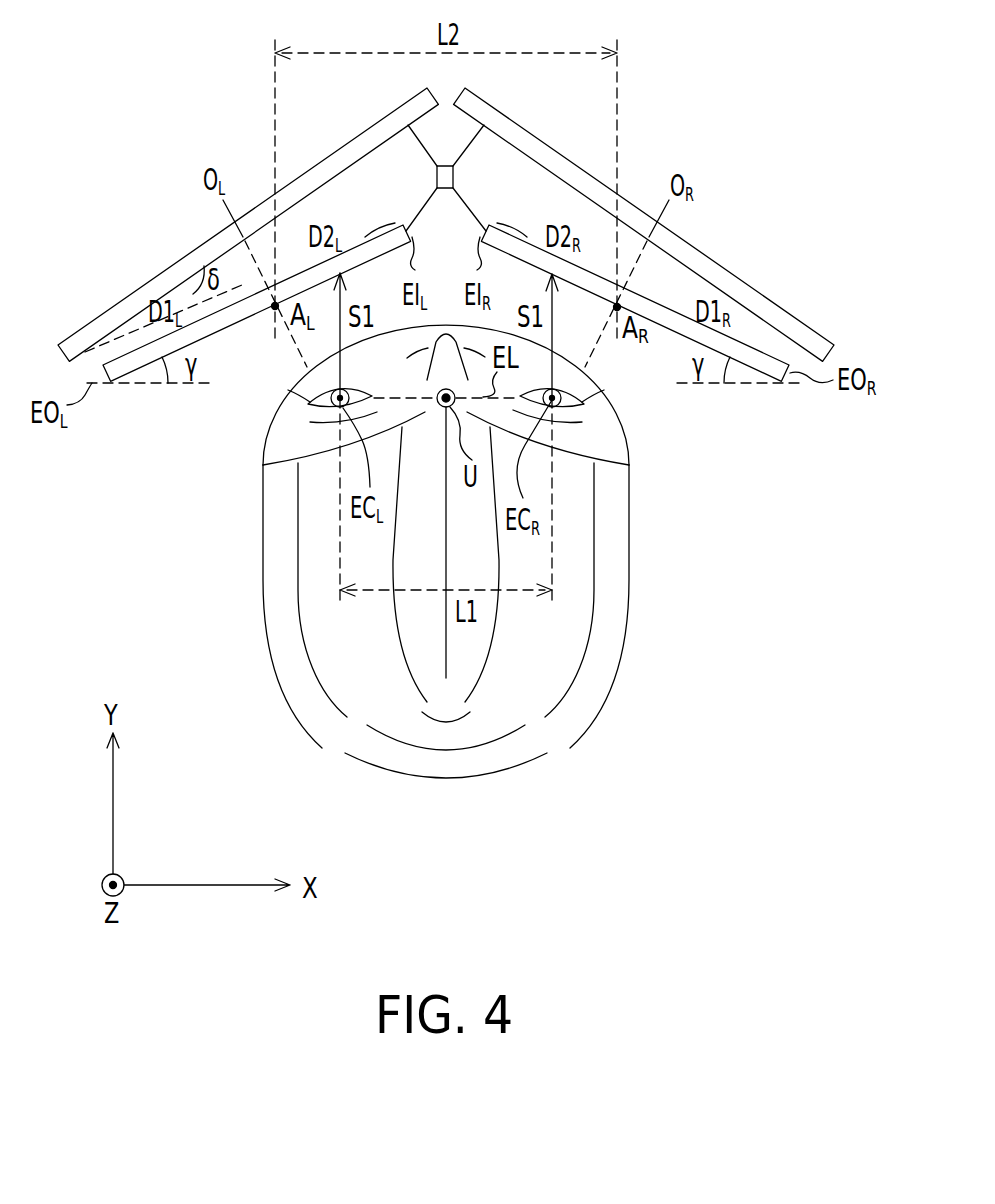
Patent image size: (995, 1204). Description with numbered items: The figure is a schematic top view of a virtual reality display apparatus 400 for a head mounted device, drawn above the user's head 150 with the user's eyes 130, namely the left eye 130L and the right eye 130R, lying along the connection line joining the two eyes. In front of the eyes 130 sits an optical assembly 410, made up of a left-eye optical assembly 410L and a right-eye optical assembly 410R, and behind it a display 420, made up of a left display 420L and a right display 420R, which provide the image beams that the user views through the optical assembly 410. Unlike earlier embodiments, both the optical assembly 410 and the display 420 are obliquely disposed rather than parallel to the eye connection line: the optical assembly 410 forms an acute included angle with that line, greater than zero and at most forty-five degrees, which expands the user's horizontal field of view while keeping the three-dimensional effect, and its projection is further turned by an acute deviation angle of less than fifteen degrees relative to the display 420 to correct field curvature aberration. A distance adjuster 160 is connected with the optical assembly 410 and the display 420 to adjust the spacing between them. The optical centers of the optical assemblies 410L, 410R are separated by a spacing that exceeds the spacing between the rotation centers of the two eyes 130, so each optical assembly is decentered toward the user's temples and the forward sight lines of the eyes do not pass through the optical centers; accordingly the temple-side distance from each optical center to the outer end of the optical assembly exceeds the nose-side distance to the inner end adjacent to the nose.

The virtual reality display apparatus 400 is at (475, 483).
The display 420 is at (450, 224).
The left-eye display 420L is at (130, 295).
The right-eye display 420R is at (733, 277).
The optical assembly 410 is at (493, 348).
The left-eye optical assembly 410L is at (118, 383).
The right-eye optical assembly 410R is at (800, 387).
The distance adjuster 160 is at (453, 176).
The user's head 150 is at (505, 773).
The user's eyes 130 is at (451, 452).
The user's left eye 130L is at (312, 402).
The user's right eye 130R is at (562, 394).